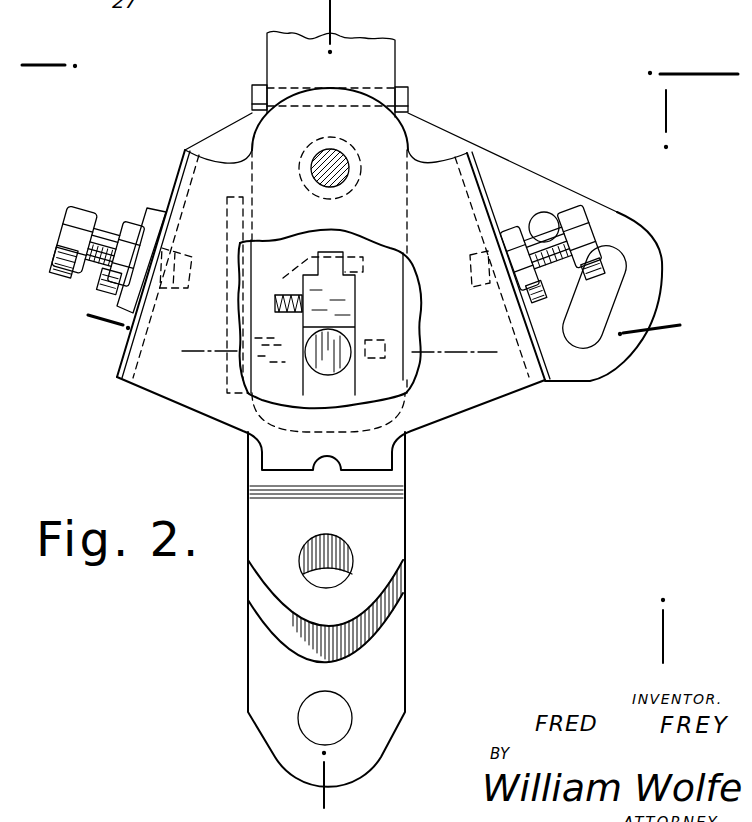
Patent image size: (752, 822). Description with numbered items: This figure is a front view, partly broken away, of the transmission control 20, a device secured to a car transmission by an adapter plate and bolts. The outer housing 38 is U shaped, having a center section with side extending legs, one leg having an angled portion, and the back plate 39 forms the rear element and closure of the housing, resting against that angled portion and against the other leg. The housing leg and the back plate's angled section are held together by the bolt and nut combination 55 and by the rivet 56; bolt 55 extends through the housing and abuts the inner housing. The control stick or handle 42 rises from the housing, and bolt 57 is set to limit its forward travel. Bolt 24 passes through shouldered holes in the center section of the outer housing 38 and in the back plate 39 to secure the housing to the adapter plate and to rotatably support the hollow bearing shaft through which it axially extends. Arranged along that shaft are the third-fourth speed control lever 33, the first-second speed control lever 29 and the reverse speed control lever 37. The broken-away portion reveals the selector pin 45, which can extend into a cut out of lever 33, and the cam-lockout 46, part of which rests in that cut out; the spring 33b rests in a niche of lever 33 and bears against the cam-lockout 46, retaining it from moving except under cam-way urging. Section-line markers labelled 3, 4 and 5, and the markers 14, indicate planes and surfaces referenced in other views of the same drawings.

The transmission control 20 is at (466, 104).
The back plate 39 is at (457, 147).
The outer housing 38 is at (478, 383).
The control stick 42 is at (396, 54).
The bolt 24 is at (338, 172).
The cam-lockout 46 is at (330, 297).
The selector pin 45 is at (338, 340).
The spring 33b is at (275, 301).
The third-fourth speed control lever 33 is at (392, 545).
The first-second speed control lever 29 is at (403, 592).
The reverse speed control lever 37 is at (390, 688).
The bolt and nut combination 55 is at (60, 250).
The rivet 56 is at (547, 222).
The bolt 57 is at (584, 227).
The wing plate 14 is at (668, 320).
The section line 3- 3 is at (712, 68).
The section line 4- 4 is at (673, 641).
The section line 5- 5 is at (334, 797).